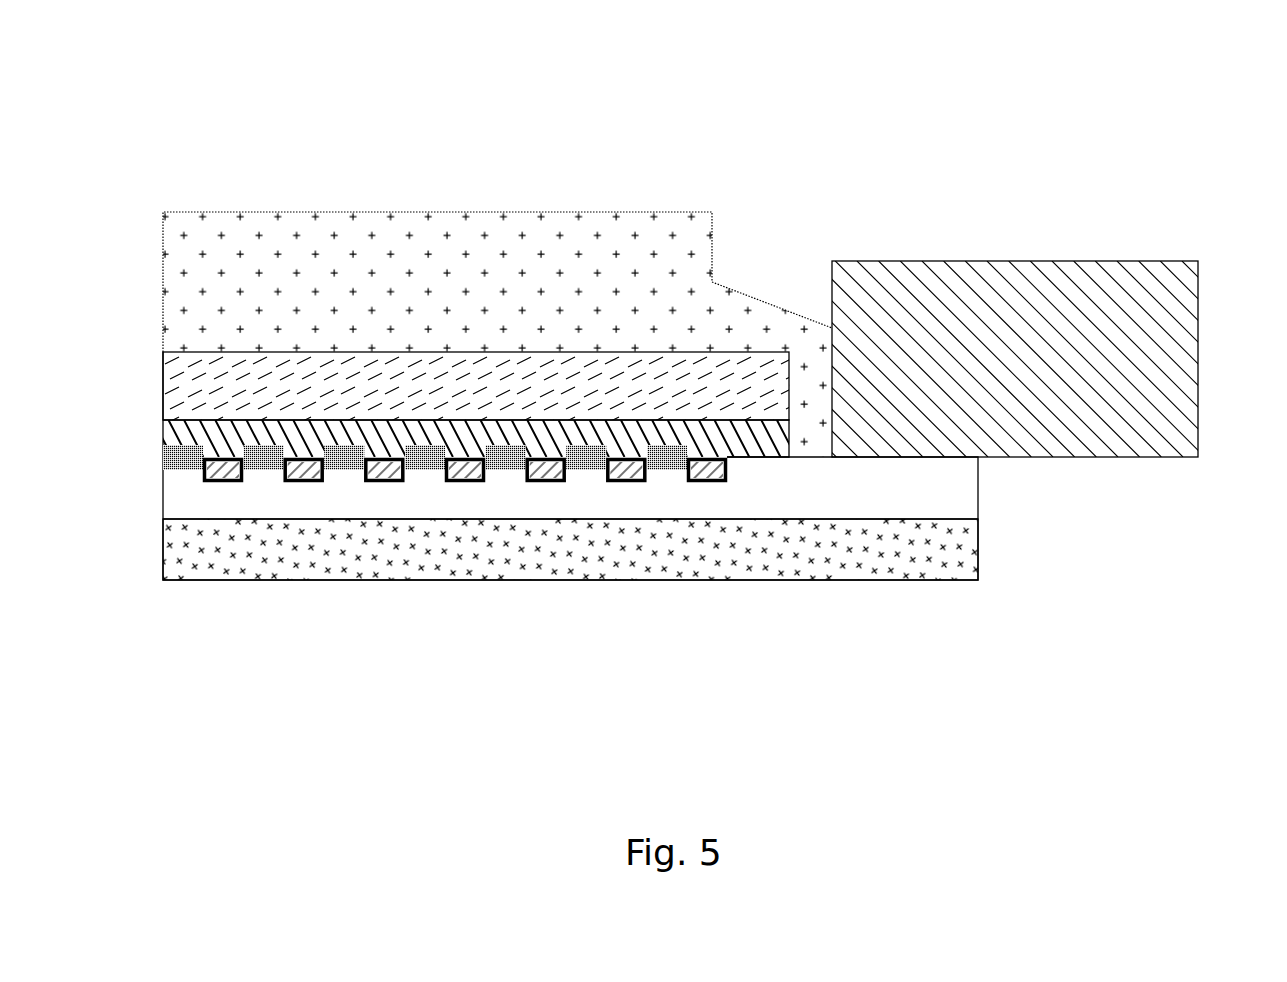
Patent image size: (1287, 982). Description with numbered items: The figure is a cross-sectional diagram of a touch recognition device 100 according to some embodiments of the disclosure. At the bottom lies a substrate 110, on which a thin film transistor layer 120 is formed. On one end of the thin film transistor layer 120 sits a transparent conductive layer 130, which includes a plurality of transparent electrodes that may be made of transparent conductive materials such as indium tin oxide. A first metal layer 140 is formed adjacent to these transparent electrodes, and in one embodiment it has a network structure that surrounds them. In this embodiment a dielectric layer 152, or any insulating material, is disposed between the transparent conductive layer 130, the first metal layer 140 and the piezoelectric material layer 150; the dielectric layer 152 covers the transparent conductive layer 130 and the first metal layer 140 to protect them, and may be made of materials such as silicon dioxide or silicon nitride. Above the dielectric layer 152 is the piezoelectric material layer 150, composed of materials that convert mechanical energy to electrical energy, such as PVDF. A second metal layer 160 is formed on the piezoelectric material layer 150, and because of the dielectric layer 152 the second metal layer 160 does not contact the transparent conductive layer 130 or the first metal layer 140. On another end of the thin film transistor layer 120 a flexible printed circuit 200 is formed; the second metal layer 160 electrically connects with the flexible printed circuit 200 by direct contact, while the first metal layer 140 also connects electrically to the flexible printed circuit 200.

The touch recognition device 100 is at (140, 73).
The substrate 110 is at (975, 543).
The thin film transistor layer 120 is at (975, 483).
The transparent conductive layer 130 is at (203, 480).
The first metal layer 140 is at (168, 460).
The piezoelectric material layer 150 is at (165, 383).
The dielectric layer 152 is at (165, 428).
The second metal layer 160 is at (163, 284).
The flexible printed circuit 200 is at (1183, 355).